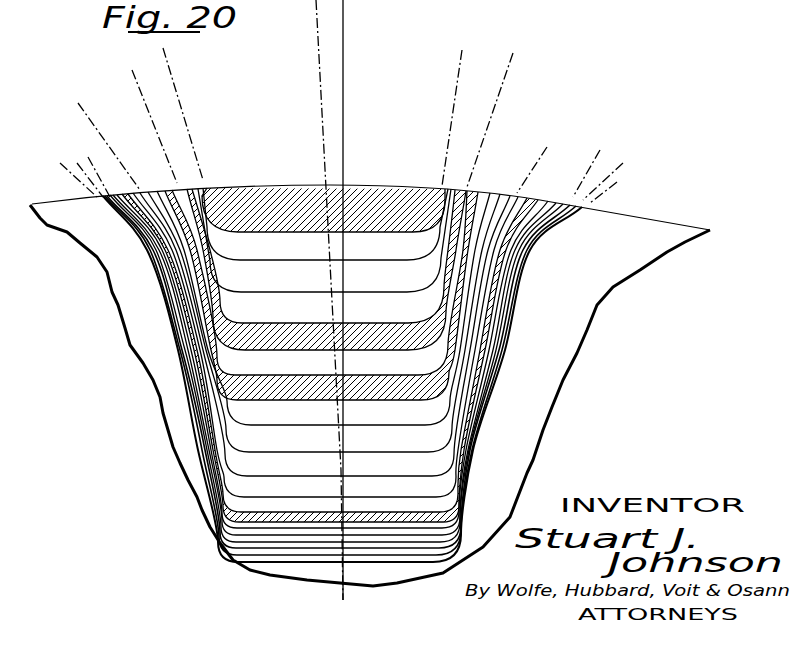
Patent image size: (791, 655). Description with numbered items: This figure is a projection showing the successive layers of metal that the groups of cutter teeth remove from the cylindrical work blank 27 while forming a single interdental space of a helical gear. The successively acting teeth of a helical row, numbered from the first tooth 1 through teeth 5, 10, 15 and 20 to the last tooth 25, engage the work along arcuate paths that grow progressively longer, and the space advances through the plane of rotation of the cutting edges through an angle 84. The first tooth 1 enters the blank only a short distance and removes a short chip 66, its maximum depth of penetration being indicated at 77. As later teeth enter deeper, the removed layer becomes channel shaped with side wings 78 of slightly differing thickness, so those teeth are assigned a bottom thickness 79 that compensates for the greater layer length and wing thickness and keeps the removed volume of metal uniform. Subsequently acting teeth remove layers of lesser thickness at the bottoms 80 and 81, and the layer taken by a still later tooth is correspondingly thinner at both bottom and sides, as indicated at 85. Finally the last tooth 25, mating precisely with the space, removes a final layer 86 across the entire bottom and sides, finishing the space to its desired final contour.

The first tooth 1 is at (461, 72).
The cutter tooth 5 is at (499, 99).
The cutter tooth 10 is at (580, 142).
The cutter tooth 15 is at (591, 178).
The cutter tooth 20 is at (604, 174).
The last tooth 25 is at (607, 192).
The cylindrical work blank 27 is at (156, 398).
The chip 66 is at (291, 188).
The depth of penetration 77 is at (402, 183).
The side wings 78 is at (167, 197).
The bottom thickness 79 is at (450, 374).
The bottom of layer 80 is at (242, 540).
The bottom of layer 81 is at (250, 557).
The angle 84 is at (370, 53).
The assigned layer thickness 85 is at (298, 553).
The final layer 86 is at (327, 562).